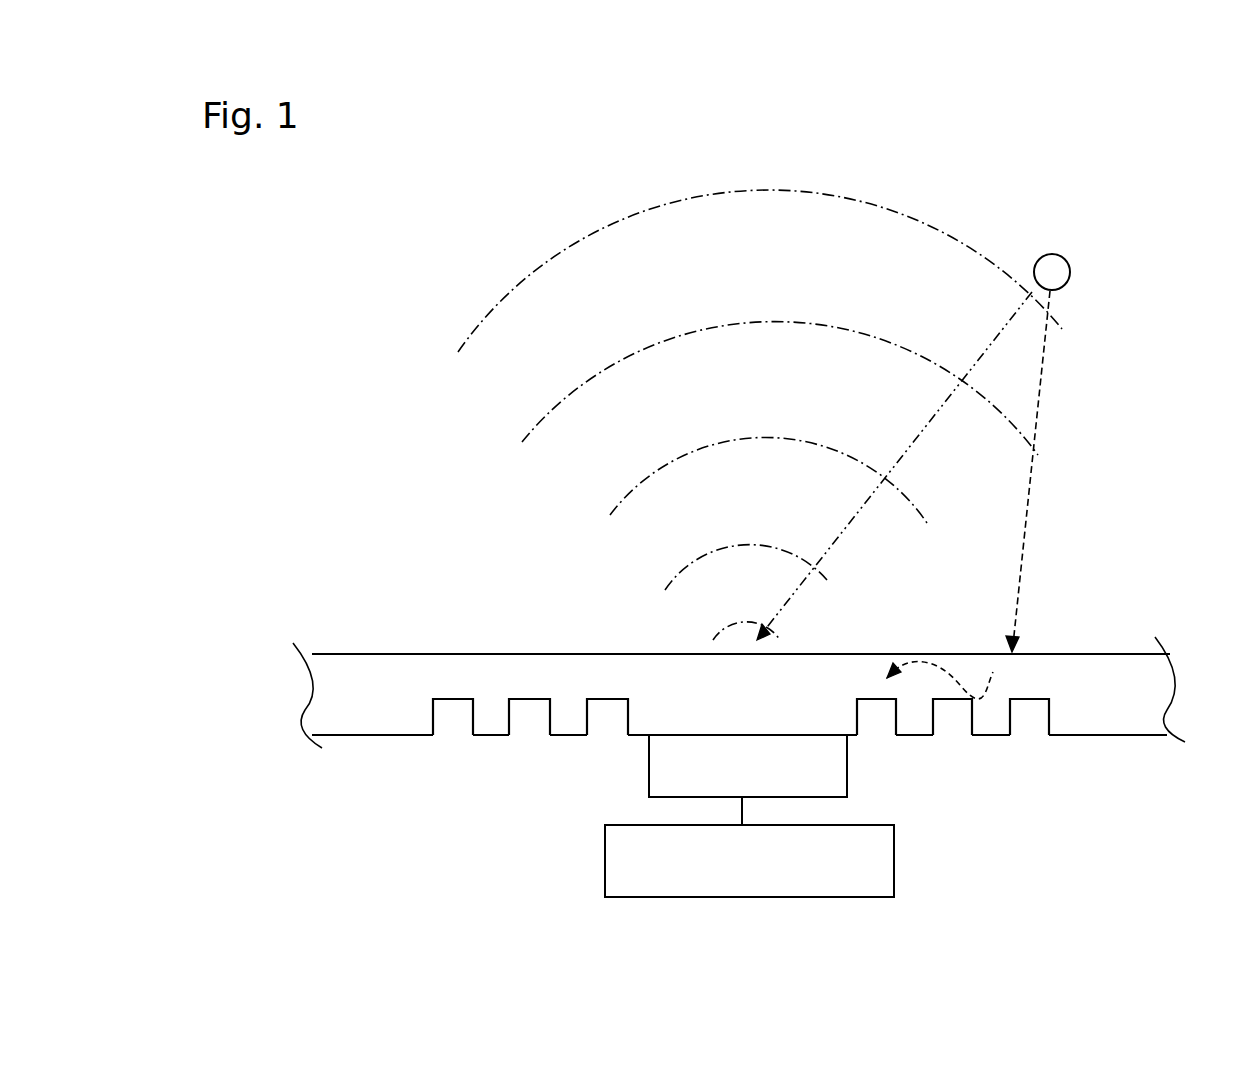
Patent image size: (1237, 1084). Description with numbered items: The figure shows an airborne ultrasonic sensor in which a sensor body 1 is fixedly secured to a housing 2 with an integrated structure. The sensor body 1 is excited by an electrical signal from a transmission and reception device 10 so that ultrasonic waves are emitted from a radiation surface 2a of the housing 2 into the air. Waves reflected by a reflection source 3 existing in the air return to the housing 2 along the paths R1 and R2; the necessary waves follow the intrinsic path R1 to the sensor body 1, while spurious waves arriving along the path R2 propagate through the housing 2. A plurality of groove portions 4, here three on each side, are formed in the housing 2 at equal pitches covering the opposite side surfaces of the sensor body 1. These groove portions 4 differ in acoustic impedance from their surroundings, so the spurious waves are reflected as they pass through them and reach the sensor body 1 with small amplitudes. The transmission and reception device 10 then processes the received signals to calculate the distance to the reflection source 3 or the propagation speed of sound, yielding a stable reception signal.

The sensor body 1 is at (847, 762).
The housing 2 is at (372, 723).
The radiation surface 2a is at (715, 654).
The reflection source 3 is at (1057, 257).
The groove portions 4 is at (600, 728).
The transmission and reception device 10 is at (894, 862).
The path R1 is at (912, 445).
The path R2 is at (1023, 542).